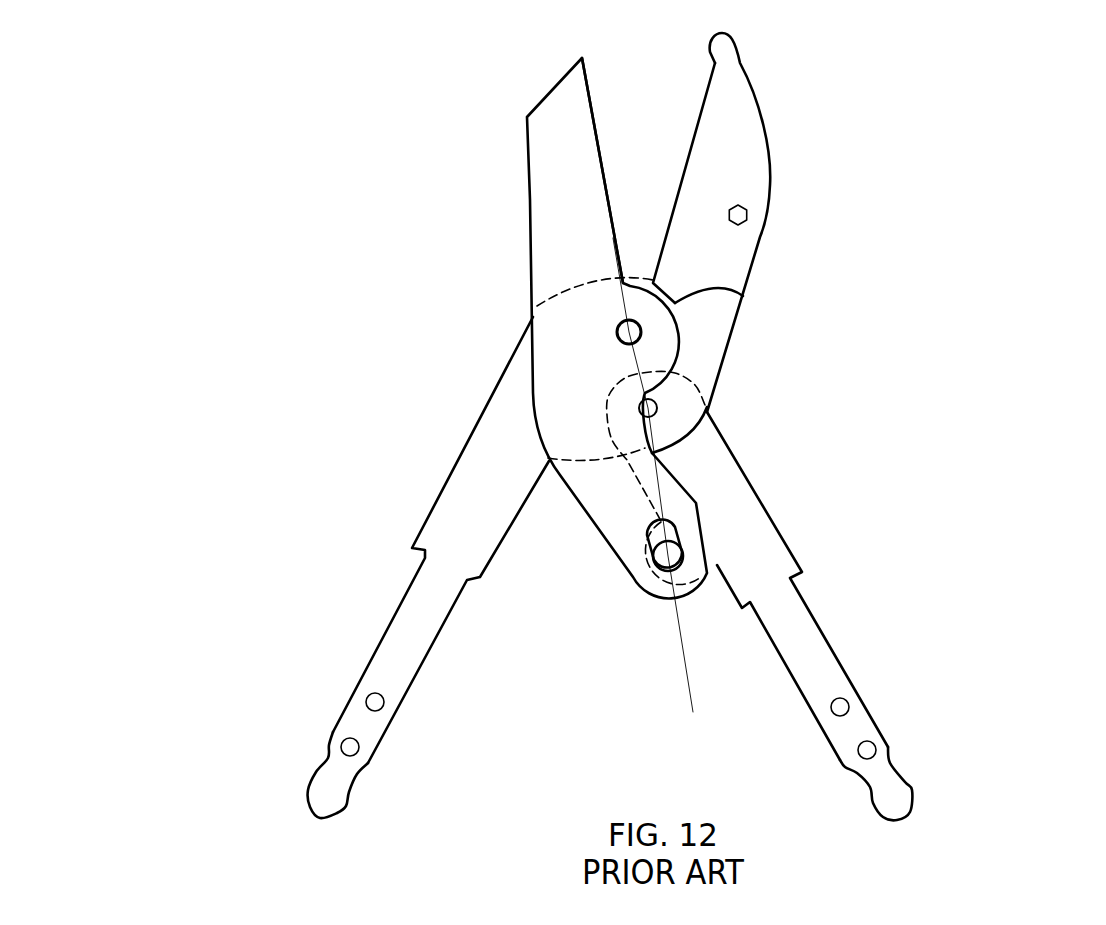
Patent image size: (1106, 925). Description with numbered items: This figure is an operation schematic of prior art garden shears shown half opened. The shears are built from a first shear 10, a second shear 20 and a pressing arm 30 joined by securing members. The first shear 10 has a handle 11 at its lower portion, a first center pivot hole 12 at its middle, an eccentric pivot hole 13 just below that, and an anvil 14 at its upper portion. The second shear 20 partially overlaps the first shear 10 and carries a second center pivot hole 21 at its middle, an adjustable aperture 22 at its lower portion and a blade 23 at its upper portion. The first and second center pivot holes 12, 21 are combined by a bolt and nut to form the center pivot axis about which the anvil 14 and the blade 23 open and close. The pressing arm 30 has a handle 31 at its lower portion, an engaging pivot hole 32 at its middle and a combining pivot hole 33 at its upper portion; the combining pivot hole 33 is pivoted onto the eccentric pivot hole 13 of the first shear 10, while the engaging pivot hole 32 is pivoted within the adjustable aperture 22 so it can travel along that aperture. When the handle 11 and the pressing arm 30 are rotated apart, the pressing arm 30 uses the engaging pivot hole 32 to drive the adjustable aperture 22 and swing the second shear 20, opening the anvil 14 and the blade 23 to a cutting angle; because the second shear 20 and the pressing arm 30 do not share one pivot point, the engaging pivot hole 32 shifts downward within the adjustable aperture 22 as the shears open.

The first shear 10 is at (745, 244).
The handle 11 is at (400, 645).
The first center pivot hole 12 is at (489, 294).
The eccentric pivot hole 13 is at (496, 384).
The anvil 14 is at (680, 183).
The second shear 20 is at (514, 390).
The second center pivot hole 21 is at (618, 327).
The adjustable aperture 22 is at (667, 572).
The blade 23 is at (590, 115).
The pressing arm 30 is at (790, 595).
The handle 31 is at (863, 727).
The engaging pivot hole 32 is at (657, 553).
The combining pivot hole 33 is at (639, 407).